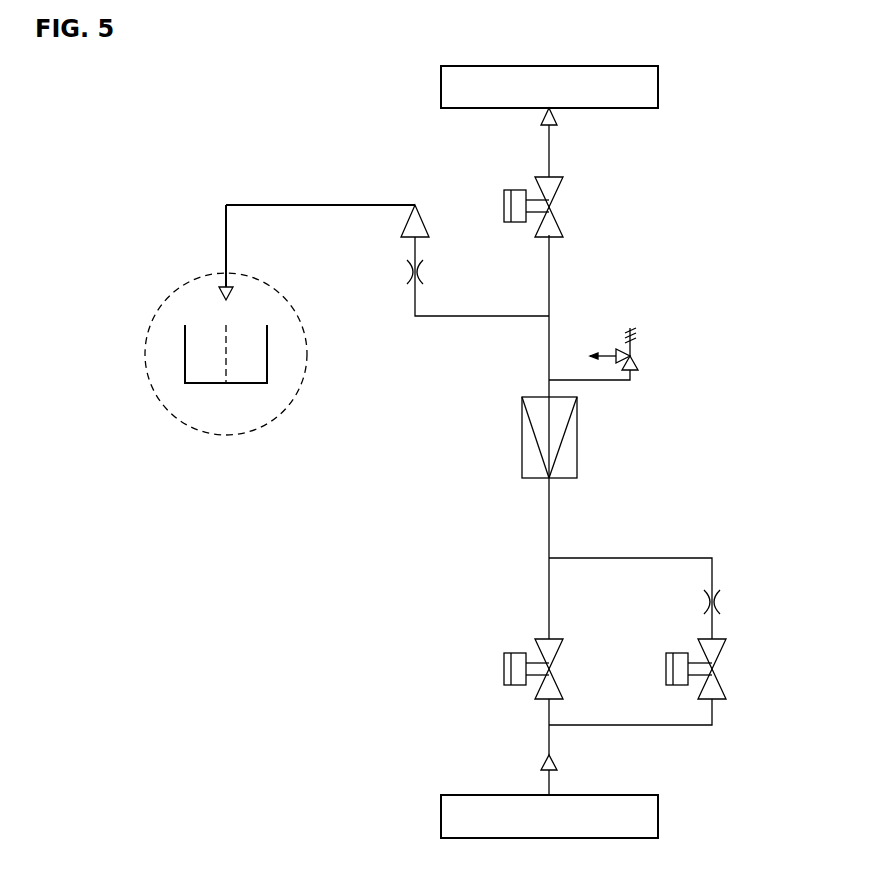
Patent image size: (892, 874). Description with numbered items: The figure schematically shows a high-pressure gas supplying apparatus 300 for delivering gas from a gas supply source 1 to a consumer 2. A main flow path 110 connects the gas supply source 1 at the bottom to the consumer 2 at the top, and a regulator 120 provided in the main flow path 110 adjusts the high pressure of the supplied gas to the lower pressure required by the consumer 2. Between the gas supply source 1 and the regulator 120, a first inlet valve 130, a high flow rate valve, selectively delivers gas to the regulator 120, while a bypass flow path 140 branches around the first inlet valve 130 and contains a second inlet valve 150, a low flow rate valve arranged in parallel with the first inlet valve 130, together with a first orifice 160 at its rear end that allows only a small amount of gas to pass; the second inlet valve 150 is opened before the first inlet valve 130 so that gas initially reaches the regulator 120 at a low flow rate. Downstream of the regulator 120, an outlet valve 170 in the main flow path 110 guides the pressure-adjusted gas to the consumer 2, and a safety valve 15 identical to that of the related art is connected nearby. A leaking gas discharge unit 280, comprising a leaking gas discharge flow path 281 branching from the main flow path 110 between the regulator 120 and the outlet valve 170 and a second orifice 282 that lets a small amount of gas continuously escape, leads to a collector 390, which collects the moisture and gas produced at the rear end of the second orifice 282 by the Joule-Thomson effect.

The gas supply source 1 is at (658, 816).
The consumer 2 is at (658, 85).
The safety valve 15 is at (643, 351).
The main flow path 110 is at (546, 590).
The regulator 120 is at (584, 439).
The first inlet valve 130 is at (532, 697).
The bypass flow path 140 is at (719, 718).
The second inlet valve 150 is at (729, 652).
The first orifice 160 is at (723, 603).
The outlet valve 170 is at (567, 217).
The leaking gas discharge unit 280 is at (460, 334).
The leaking gas discharge flow path 281 is at (497, 316).
The second orifice 282 is at (405, 277).
The high-pressure gas supplying apparatus 300 is at (732, 171).
The collector 390 is at (205, 390).